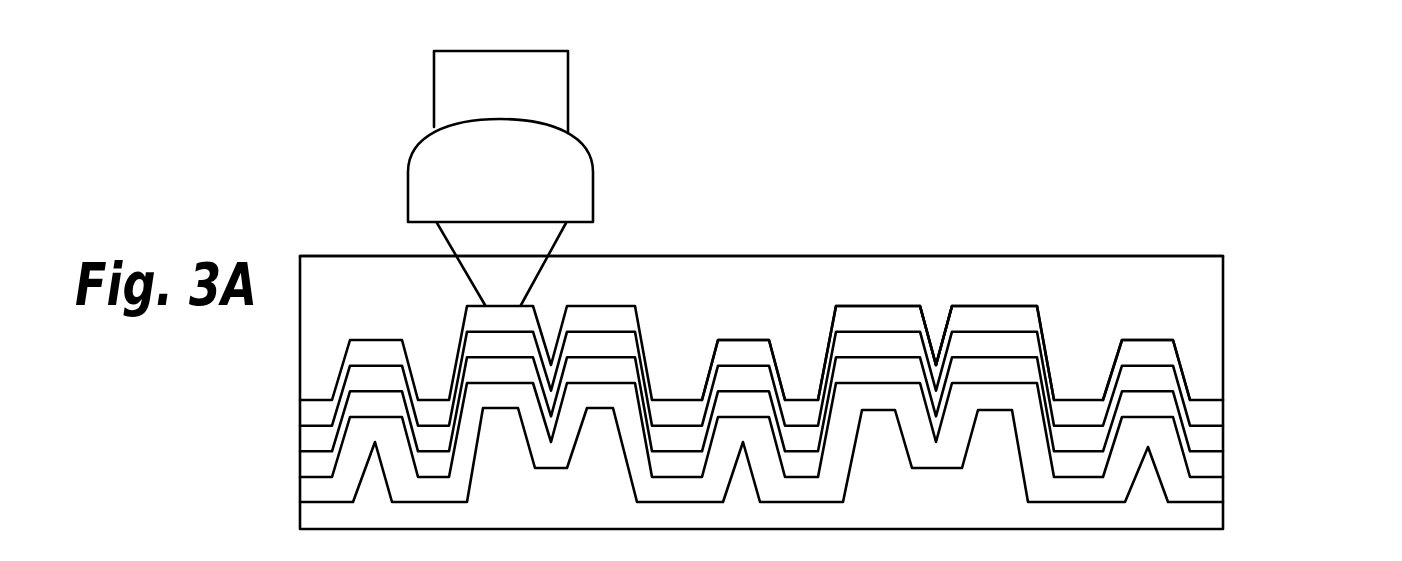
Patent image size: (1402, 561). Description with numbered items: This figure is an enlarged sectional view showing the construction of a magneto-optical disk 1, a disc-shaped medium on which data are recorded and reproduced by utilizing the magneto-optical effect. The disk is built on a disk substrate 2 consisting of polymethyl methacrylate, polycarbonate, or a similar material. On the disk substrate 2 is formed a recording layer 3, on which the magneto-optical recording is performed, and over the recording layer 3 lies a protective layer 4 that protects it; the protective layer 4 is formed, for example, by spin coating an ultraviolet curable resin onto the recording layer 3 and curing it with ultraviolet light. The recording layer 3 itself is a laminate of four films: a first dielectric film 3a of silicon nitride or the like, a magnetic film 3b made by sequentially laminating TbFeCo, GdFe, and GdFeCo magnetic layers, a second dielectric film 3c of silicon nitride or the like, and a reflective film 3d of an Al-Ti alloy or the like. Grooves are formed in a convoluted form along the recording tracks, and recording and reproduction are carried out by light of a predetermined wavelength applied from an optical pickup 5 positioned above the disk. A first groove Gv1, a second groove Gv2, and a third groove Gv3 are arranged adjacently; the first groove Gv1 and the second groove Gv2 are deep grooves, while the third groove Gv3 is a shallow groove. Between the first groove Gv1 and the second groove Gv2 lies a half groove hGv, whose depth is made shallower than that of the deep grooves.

The magneto-optical disk 1 is at (1210, 257).
The disk substrate 2 is at (1207, 291).
The recording layer 3 is at (808, 410).
The first dielectric film 3a is at (1207, 411).
The magnetic film 3b is at (1207, 440).
The second dielectric film 3c is at (1207, 467).
The reflective film 3d is at (1282, 377).
The protective layer 4 is at (1208, 517).
The optical pickup 5 is at (595, 187).
The first groove Gv1 is at (880, 307).
The second groove Gv2 is at (993, 307).
The third groove Gv3 is at (745, 340).
The half groove hGv is at (937, 333).